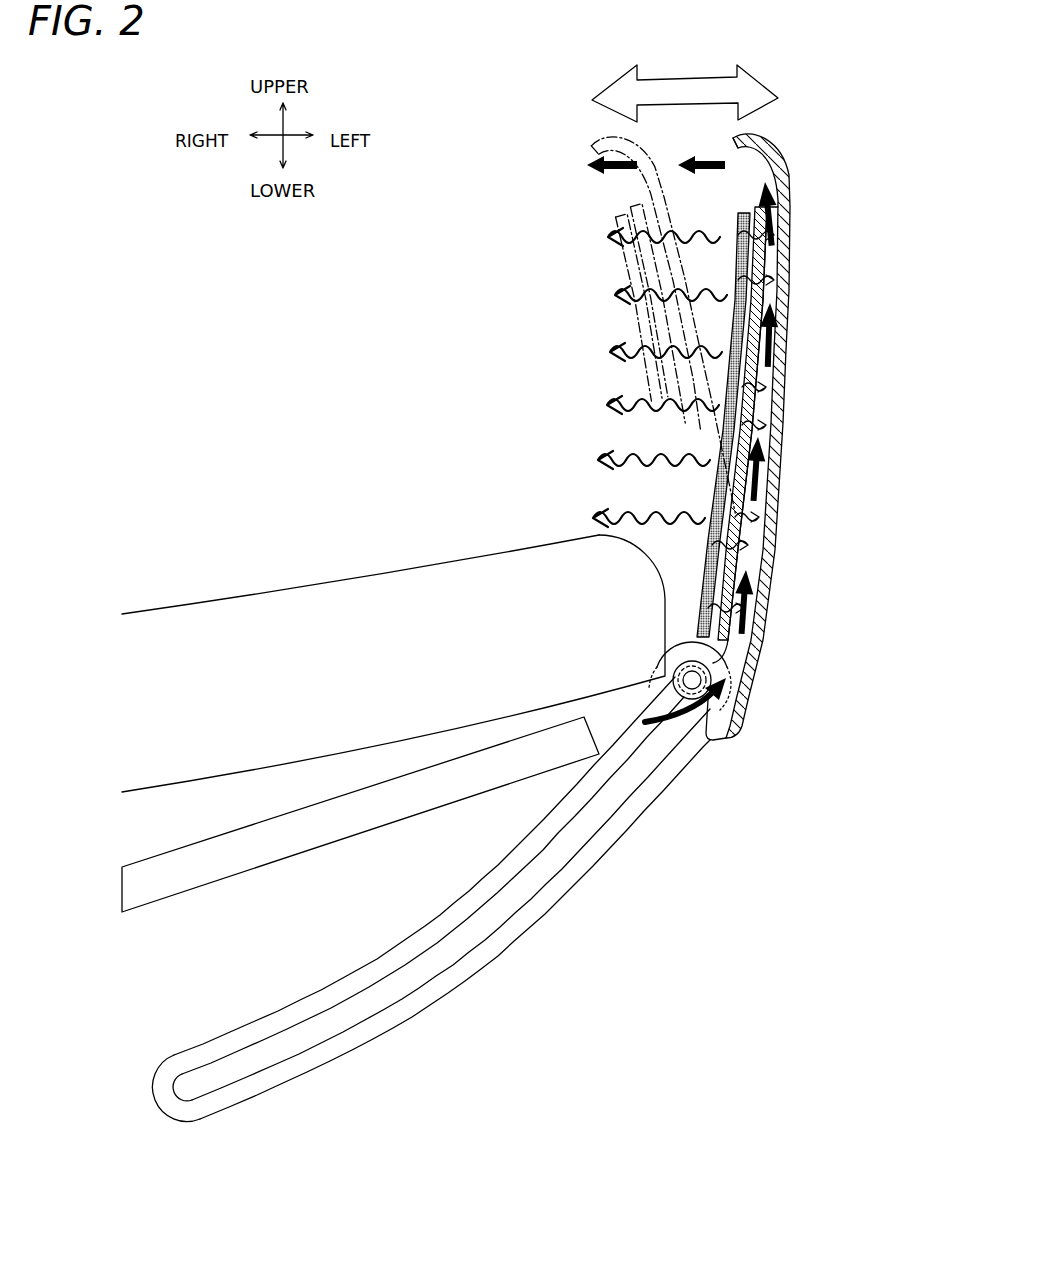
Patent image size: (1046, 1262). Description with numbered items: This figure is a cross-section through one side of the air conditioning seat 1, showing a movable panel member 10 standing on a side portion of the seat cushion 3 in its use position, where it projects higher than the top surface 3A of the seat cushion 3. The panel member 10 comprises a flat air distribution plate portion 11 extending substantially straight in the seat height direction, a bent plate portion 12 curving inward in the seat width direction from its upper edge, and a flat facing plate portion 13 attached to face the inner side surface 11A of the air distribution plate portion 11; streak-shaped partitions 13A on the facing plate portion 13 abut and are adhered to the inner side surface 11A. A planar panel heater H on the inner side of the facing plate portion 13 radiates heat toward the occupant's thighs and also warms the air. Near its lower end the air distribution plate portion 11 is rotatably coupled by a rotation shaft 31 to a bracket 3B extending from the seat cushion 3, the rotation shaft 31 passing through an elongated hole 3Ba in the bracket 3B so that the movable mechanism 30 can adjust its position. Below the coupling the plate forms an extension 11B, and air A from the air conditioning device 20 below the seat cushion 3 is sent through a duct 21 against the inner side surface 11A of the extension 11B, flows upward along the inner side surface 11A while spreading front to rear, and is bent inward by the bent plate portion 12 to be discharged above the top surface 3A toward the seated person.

The air conditioning seat 1 is at (546, 68).
The seat cushion 3 is at (261, 590).
The top surface 3A is at (357, 570).
The bracket 3B is at (568, 883).
The elongated hole 3Ba is at (493, 914).
The panel member 10 is at (798, 168).
The air distribution plate portion 11 is at (787, 370).
The inner side surface 11A is at (766, 410).
The extension 11B is at (737, 716).
The bent plate portion 12 is at (758, 137).
The facing plate portion 13 is at (740, 487).
The partition 13A is at (757, 533).
The air conditioning device 20 is at (360, 814).
The duct 21 is at (357, 825).
The movable mechanism 30 is at (666, 838).
The rotation shaft 31 is at (700, 678).
The air A is at (775, 194).
The panel heater H is at (737, 323).